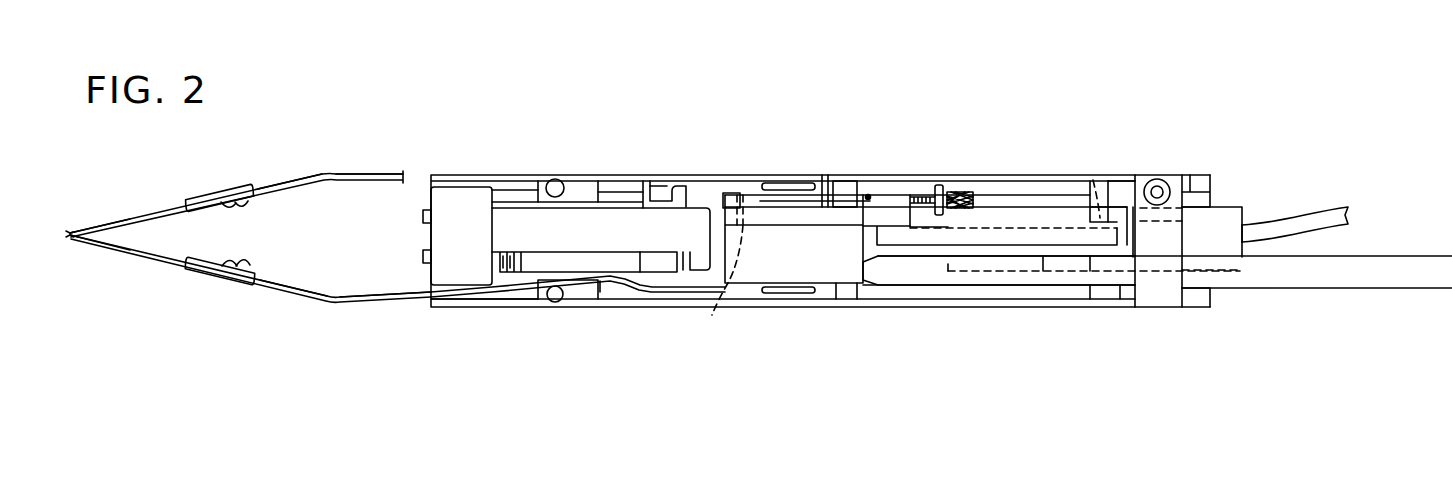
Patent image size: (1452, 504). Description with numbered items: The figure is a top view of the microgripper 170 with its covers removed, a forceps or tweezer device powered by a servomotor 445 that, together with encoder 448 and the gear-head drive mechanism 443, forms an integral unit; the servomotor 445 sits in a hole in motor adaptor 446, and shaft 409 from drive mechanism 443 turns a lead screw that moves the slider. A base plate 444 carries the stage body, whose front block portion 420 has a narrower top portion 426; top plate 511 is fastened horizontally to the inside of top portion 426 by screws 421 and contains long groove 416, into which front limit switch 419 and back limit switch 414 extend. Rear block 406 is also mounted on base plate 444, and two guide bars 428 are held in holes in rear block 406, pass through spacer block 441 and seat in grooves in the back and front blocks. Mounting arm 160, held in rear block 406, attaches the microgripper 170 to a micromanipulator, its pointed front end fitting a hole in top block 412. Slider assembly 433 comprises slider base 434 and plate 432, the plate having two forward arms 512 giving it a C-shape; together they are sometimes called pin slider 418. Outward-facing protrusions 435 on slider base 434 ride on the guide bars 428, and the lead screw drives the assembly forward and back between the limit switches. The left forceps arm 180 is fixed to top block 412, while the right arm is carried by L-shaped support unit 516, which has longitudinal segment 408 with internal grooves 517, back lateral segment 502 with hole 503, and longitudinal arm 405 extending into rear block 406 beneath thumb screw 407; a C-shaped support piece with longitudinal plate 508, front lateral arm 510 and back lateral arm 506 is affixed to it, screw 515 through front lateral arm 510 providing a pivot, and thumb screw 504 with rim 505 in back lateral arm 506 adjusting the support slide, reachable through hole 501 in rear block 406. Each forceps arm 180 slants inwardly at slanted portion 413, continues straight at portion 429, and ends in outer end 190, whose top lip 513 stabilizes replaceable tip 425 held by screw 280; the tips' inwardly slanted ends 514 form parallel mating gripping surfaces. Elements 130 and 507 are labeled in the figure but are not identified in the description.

The cable 130 is at (1322, 208).
The mounting arm 160 is at (1352, 289).
The microgripper 170 is at (866, 152).
The forceps arm 180 is at (318, 175).
The outer end 190 is at (272, 188).
The screw 280 is at (242, 258).
The longitudinal arm 405 is at (1193, 176).
The rear block 406 is at (1158, 303).
The thumb screw 407 is at (1157, 179).
The longitudinal segment 408 is at (995, 240).
The shaft 409 is at (780, 183).
The top block 412 is at (823, 268).
The slanted portion 413 is at (578, 286).
The back limit switch 414 is at (655, 262).
The long groove 416 is at (590, 290).
The pin slider 418 is at (556, 178).
The front limit switch 419 is at (505, 303).
The front block portion 420 is at (445, 215).
The screws 421 is at (423, 256).
The replaceable tip 425 is at (122, 220).
The top portion 426 is at (467, 215).
The guide bars 428 is at (512, 185).
The straight portion 429 is at (375, 173).
The plate 432 is at (613, 176).
The slider assembly 433 is at (596, 184).
The slider base 434 is at (688, 184).
The protrusions 435 is at (695, 192).
The spacer block 441 is at (843, 303).
The drive mechanism 443 is at (973, 250).
The base plate 444 is at (1030, 180).
The servomotor 445 is at (1063, 256).
The motor adaptor 446 is at (1105, 296).
The encoder 448 is at (1250, 222).
The hole 501 is at (1222, 210).
The back lateral segment 502 is at (1100, 183).
The hole 503 is at (1093, 180).
The thumb screw 504 is at (975, 195).
The rim 505 is at (965, 190).
The back lateral arm 506 is at (897, 188).
The pin 507 is at (822, 180).
The longitudinal plate 508 is at (840, 207).
The front lateral arm 510 is at (760, 186).
The top plate 511 is at (632, 215).
The arms 512 is at (571, 179).
The top lip 513 is at (205, 198).
The slanted portion 514 is at (78, 240).
The screw 515 is at (732, 300).
The support unit 516 is at (957, 228).
The internal longitudinal grooves 517 is at (1025, 273).